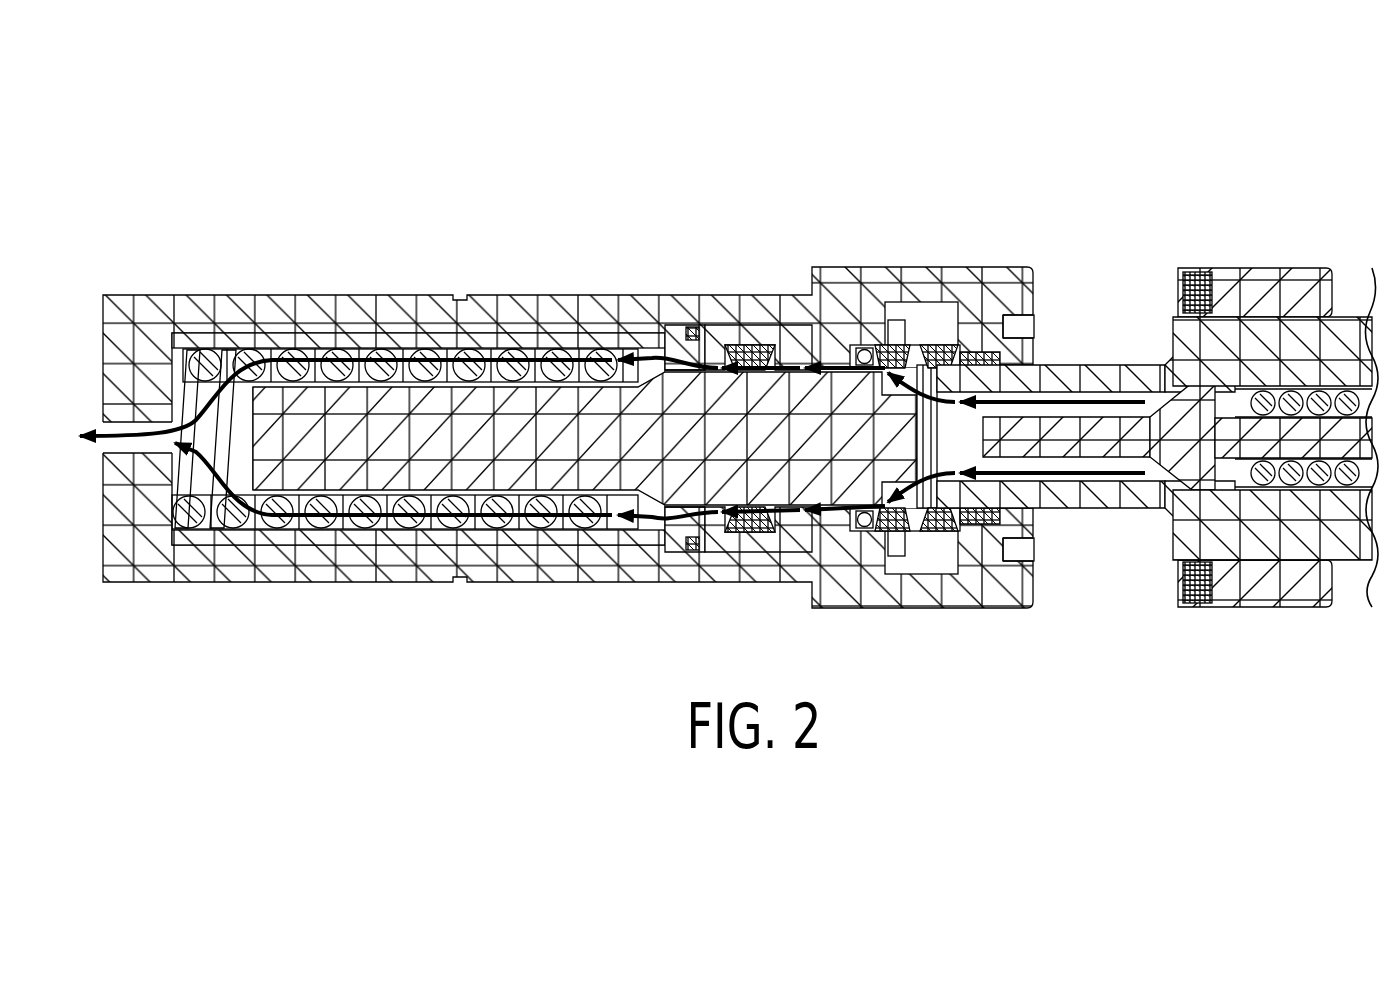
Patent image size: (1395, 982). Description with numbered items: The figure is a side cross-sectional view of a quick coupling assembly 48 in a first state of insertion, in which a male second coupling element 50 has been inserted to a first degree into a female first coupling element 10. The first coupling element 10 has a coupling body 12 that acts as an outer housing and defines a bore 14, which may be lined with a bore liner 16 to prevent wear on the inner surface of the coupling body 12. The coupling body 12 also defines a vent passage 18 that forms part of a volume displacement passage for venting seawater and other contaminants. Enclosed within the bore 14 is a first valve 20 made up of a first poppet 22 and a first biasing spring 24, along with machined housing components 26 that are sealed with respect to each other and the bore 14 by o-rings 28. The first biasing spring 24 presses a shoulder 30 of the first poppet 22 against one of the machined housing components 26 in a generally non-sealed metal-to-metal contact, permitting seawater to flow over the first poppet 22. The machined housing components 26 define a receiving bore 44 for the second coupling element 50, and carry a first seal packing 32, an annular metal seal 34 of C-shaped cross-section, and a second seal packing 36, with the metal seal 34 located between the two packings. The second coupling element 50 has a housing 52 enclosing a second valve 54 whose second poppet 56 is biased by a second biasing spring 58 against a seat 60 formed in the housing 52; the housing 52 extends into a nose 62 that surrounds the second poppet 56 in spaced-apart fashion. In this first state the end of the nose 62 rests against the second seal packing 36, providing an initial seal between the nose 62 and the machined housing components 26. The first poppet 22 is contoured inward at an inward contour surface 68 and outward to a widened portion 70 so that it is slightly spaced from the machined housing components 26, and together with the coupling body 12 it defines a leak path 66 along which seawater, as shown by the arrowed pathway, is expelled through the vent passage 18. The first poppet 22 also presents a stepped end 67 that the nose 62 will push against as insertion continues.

The first coupling element 10 is at (403, 208).
The coupling body 12 is at (332, 295).
The bore 14 is at (198, 348).
The bore liner 16 is at (412, 338).
The vent passage 18 is at (118, 446).
The first valve 20 is at (472, 530).
The first poppet 22 is at (430, 470).
The first biasing spring 24 is at (265, 527).
The machined housing components 26 is at (905, 370).
The o-rings 28 is at (692, 326).
The shoulder 30 is at (656, 350).
The first seal packing 32 is at (742, 345).
The annular metal seal 34 is at (888, 345).
The second seal packing 36 is at (952, 345).
The receiving bore 44 is at (1040, 365).
The quick coupling assembly 48 is at (772, 128).
The second coupling element 50 is at (1287, 217).
The housing 52 is at (1350, 318).
The second valve 54 is at (1200, 490).
The second poppet 56 is at (1088, 458).
The second biasing spring 58 is at (1270, 490).
The seat 60 is at (1168, 365).
The nose 62 is at (985, 524).
The leak path 66 is at (495, 352).
The stepped end 67 is at (873, 545).
The inward contour surface 68 is at (705, 507).
The widened portion 70 is at (800, 522).